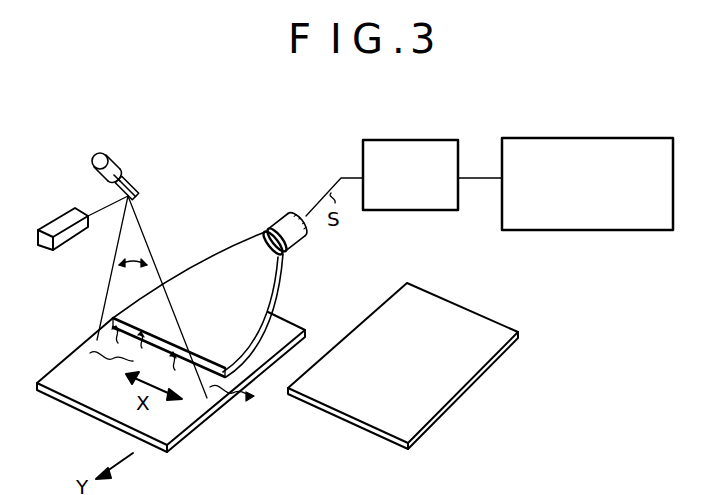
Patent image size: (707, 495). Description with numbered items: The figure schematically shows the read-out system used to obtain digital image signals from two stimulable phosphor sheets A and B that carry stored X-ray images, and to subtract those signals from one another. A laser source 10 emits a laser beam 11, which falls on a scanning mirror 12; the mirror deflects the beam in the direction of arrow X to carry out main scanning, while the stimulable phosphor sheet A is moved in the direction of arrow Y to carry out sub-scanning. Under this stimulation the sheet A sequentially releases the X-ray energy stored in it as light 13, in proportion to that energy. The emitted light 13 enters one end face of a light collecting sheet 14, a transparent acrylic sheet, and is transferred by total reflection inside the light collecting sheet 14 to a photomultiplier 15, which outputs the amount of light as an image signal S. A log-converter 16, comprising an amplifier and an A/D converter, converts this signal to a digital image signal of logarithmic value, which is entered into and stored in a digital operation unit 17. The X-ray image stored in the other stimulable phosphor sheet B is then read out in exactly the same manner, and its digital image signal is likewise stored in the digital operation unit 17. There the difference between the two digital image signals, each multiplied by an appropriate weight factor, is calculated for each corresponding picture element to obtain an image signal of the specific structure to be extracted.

The laser source 10 is at (70, 213).
The laser beam 11 is at (147, 226).
The scanning mirror 12 is at (138, 185).
The light 13 is at (157, 347).
The light collecting sheet 14 is at (232, 262).
The photomultiplier 15 is at (288, 217).
The log-converter 16 is at (430, 140).
The digital operation unit 17 is at (630, 138).
The stimulable phosphor sheet A is at (283, 332).
The stimulable phosphor sheet B is at (476, 366).